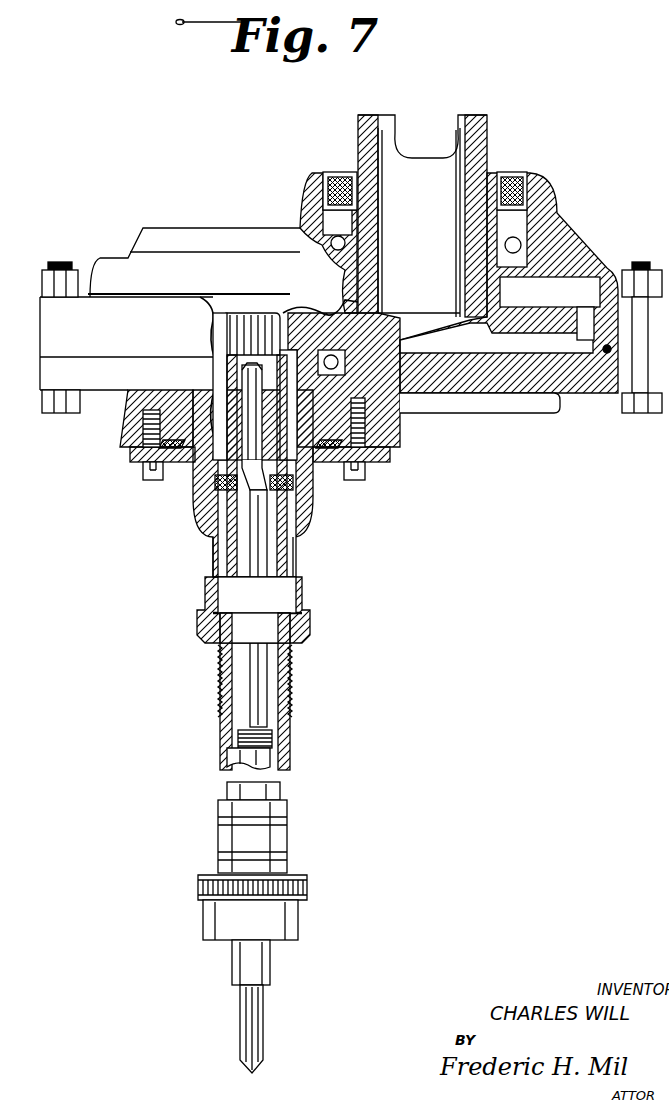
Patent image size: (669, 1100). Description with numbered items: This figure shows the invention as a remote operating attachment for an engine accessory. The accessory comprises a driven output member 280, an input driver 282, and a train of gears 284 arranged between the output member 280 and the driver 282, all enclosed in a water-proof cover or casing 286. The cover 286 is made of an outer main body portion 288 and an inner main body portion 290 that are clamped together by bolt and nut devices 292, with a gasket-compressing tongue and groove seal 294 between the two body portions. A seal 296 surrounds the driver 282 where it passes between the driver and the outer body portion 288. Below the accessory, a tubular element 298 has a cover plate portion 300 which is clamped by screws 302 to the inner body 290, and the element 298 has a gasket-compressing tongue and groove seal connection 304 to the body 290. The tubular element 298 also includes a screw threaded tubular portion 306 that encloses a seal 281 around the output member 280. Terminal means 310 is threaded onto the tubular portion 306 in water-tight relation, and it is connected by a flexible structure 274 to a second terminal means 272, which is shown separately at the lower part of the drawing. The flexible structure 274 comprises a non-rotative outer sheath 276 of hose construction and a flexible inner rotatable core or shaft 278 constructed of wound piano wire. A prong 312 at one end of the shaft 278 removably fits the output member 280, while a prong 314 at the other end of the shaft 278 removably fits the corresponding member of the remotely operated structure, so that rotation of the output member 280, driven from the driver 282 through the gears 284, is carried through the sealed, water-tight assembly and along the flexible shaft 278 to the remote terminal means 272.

The terminal means 272 is at (205, 917).
The flexible structure 274 is at (292, 757).
The non-rotative outer sheath 276 is at (227, 760).
The flexible inner rotatable core or shaft 278 is at (268, 738).
The driven output member 280 is at (235, 549).
The seal 281 is at (222, 488).
The input driver 282 is at (486, 126).
The train of gears 284 is at (216, 318).
The water-proof cover or casing 286 is at (207, 207).
The outer main body portion 288 is at (143, 232).
The inner main body portion 290 is at (118, 380).
The bolt and nut devices 292 is at (58, 260).
The gasket-compressing tongue and groove seal 294 is at (606, 356).
The seal 296 is at (323, 198).
The tubular element 298 is at (305, 498).
The cover plate portion 300 is at (385, 455).
The screws 302 is at (146, 478).
The gasket-compressing tongue and groove seal connection 304 is at (190, 447).
The screw threaded tubular portion 306 is at (299, 562).
The terminal means 310 is at (207, 598).
The prong 312 is at (264, 548).
The prong 314 is at (265, 1013).